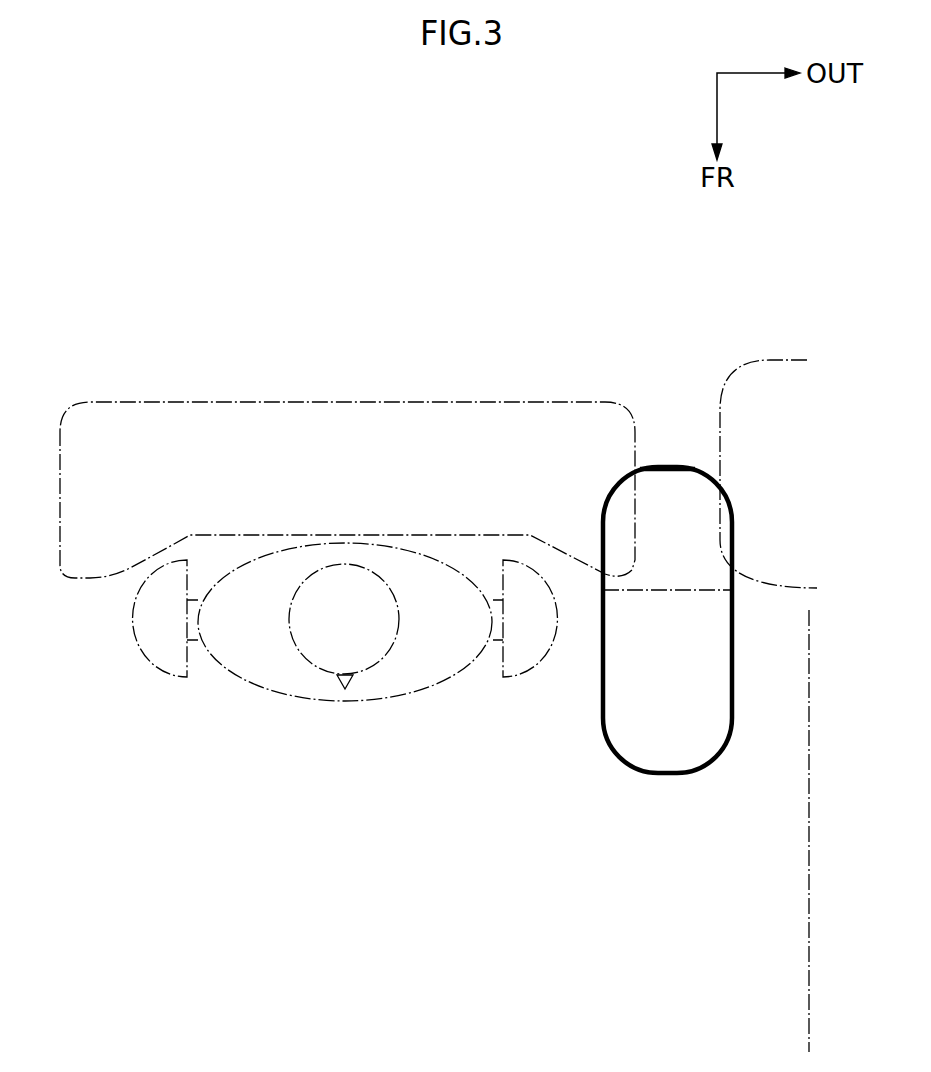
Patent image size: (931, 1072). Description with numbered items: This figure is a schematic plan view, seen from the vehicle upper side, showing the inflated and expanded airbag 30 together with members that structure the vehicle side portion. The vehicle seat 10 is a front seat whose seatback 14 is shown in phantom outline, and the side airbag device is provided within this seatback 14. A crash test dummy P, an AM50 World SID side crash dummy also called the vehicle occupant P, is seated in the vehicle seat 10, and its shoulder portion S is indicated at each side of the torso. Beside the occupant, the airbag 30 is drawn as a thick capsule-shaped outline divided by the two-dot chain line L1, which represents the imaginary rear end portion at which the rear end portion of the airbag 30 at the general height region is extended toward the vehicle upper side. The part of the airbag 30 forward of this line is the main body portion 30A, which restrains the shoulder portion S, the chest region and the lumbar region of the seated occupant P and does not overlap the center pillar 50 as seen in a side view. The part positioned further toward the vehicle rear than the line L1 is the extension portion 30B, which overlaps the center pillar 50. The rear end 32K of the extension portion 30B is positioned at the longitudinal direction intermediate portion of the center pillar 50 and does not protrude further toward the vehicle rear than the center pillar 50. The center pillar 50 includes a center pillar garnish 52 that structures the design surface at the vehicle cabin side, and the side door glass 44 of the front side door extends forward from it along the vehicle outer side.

The seatback 14 is at (347, 438).
The vehicle seat 10 is at (433, 402).
The crash test dummy P is at (272, 704).
The shoulder portion S is at (530, 674).
The airbag 30 is at (711, 630).
The main body portion 30A is at (703, 677).
The extension portion 30B is at (703, 527).
The rear end 32K is at (673, 466).
The two-dot chain line L1 is at (672, 592).
The center pillar 50 is at (749, 421).
The center pillar garnish 52 is at (736, 381).
The side door glass 44 is at (808, 902).